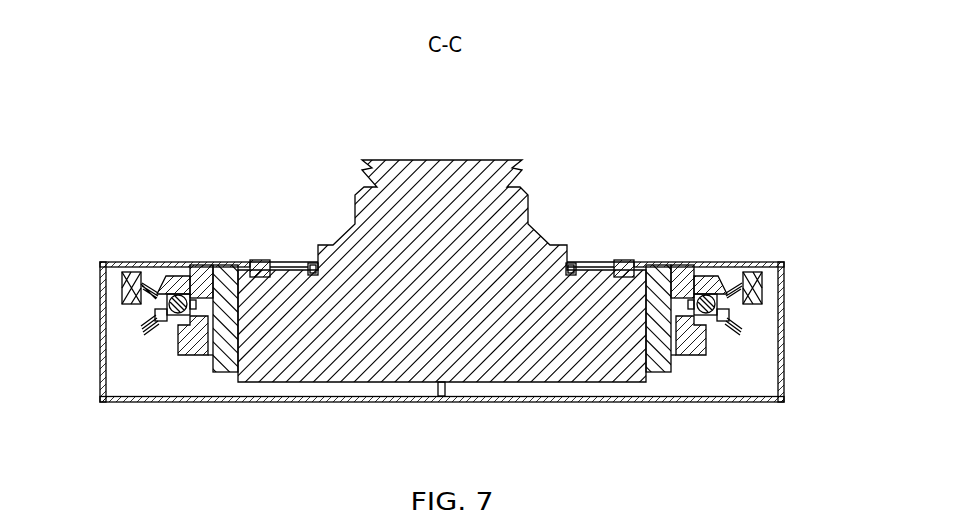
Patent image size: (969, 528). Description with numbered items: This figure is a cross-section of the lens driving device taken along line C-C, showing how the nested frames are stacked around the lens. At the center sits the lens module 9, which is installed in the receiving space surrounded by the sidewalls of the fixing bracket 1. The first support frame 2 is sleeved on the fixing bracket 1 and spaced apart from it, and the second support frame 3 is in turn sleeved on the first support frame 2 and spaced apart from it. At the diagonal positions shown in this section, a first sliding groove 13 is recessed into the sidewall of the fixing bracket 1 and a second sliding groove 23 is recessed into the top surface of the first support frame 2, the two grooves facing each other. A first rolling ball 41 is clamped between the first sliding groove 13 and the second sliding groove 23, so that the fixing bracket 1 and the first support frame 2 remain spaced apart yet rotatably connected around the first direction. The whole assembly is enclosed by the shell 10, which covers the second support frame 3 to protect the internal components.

The fixing bracket 1 is at (196, 289).
The first support frame 2 is at (188, 355).
The second support frame 3 is at (148, 284).
The lens module 9 is at (382, 238).
The shell 10 is at (787, 313).
The first sliding groove 13 is at (150, 289).
The second sliding groove 23 is at (145, 328).
The first rolling ball 41 is at (162, 308).